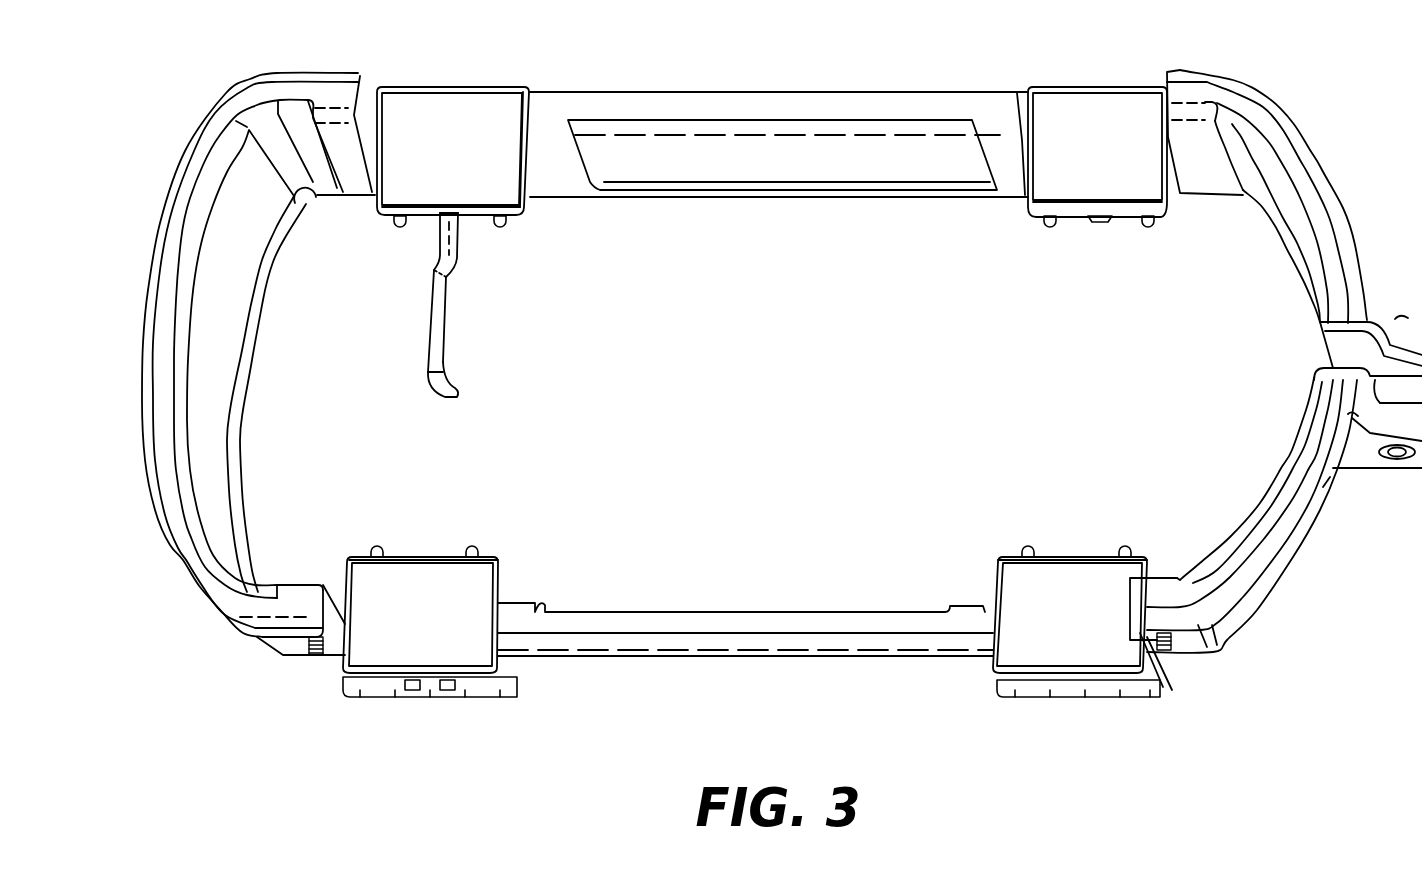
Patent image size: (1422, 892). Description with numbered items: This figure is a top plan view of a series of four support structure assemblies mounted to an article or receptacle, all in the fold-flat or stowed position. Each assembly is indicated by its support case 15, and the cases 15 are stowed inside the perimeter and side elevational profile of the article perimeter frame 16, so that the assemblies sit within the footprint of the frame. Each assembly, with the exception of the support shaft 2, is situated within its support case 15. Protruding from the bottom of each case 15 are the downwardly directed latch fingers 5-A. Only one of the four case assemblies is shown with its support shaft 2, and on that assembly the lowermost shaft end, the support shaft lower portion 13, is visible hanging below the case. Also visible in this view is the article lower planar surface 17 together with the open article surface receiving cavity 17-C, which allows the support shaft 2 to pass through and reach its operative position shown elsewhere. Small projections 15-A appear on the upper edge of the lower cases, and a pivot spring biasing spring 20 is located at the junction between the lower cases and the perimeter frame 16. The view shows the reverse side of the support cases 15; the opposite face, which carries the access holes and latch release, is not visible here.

The support shaft 2 is at (446, 340).
The support shaft lower portion 13 is at (460, 392).
The latch fingers 5-A is at (399, 228).
The support case 15 is at (456, 105).
The connector box pegs 15-A is at (380, 547).
The article perimeter frame 16 is at (786, 105).
The article lower planar surface 17 is at (350, 700).
The article surface receiving cavity 17-C is at (430, 700).
The pivot spring biasing spring 20 is at (306, 656).